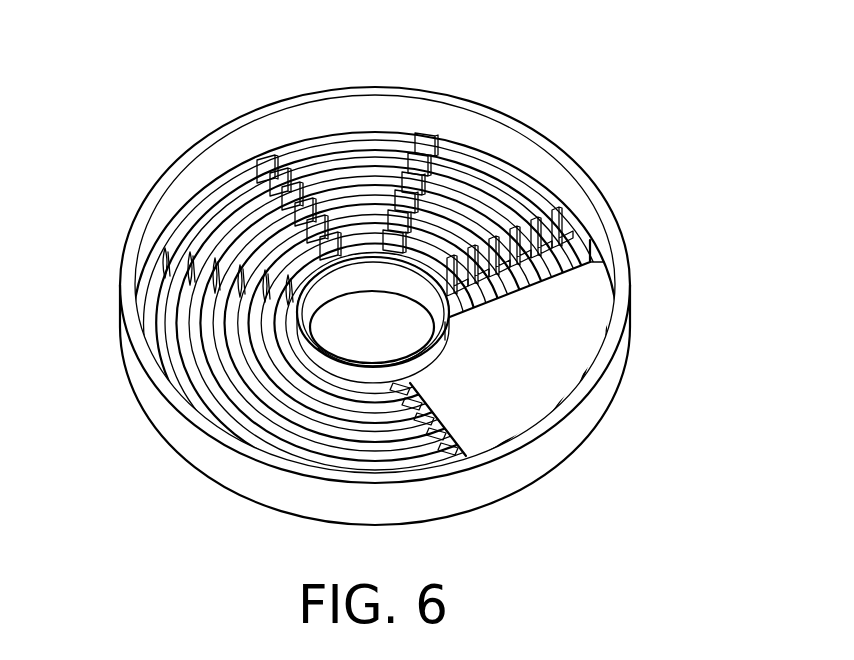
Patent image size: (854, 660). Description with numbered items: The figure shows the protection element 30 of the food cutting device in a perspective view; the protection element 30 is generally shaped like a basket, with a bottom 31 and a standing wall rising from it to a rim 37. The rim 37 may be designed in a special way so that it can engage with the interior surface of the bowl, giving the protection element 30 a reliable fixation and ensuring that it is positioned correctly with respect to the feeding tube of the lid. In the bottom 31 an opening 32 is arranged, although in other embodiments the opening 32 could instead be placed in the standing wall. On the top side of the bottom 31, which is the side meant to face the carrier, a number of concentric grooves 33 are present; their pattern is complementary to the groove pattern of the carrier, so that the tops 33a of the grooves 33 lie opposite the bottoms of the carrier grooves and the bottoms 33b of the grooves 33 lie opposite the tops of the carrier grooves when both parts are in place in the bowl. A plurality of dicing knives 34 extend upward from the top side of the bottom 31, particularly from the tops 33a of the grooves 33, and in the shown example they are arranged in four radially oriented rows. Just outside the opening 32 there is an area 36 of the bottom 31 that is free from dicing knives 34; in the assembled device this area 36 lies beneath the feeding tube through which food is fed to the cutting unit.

The protection element 30 is at (133, 376).
The bottom 31 is at (223, 213).
The opening 32 is at (577, 303).
The concentric grooves 33 is at (445, 183).
The tops of the grooves 33a is at (483, 290).
The bottoms of the grooves 33b is at (465, 300).
The dicing knives 34 is at (180, 283).
The area 36 is at (247, 397).
The rim 37 is at (157, 190).